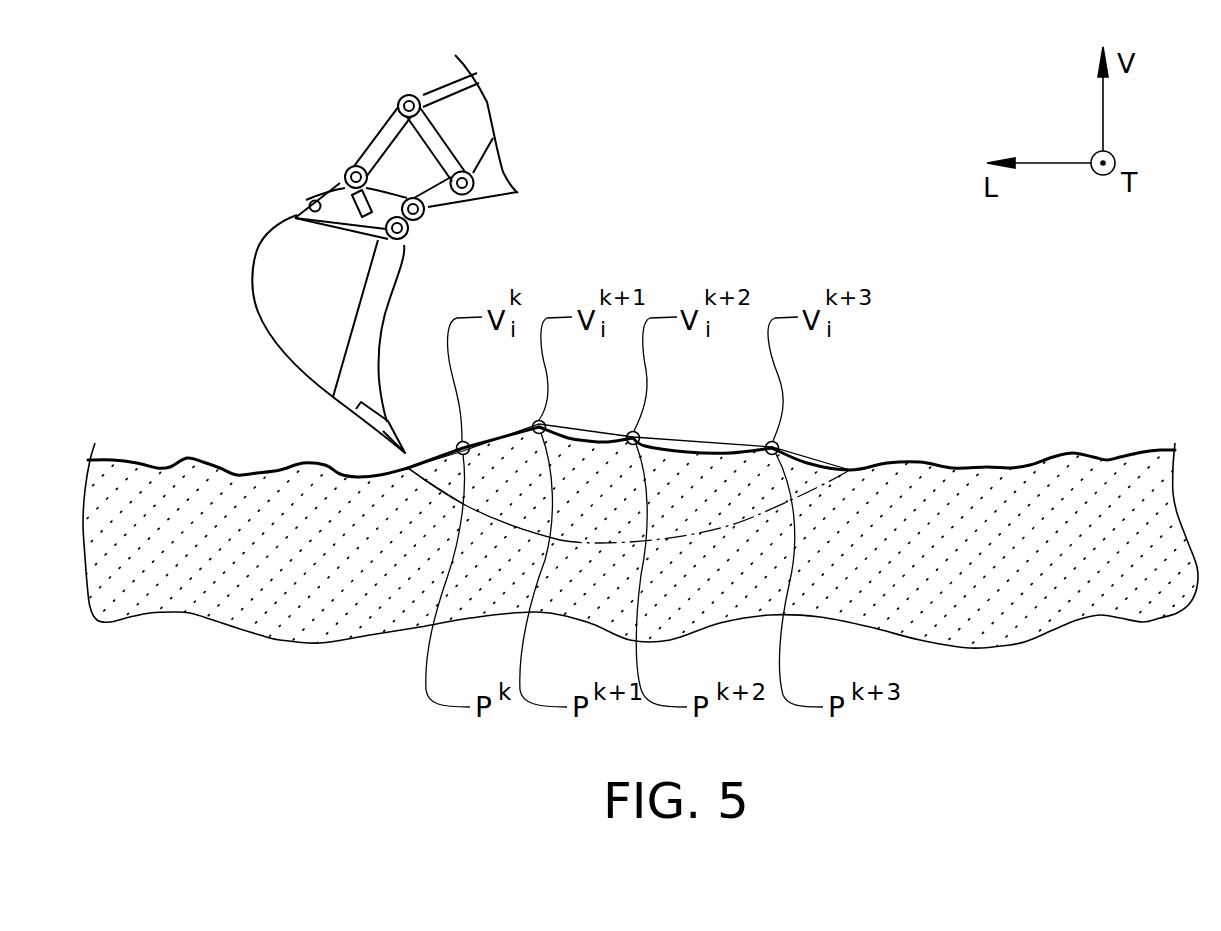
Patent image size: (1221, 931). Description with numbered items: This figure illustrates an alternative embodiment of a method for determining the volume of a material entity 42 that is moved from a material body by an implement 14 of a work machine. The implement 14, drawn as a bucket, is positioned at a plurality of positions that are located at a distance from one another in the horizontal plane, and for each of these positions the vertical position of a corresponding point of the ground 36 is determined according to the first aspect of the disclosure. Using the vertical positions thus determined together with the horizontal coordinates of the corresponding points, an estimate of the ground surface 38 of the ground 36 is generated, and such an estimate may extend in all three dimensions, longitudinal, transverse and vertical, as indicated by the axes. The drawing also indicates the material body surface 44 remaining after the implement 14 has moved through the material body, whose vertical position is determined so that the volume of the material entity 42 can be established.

The implement 14 is at (318, 289).
The ground 36 is at (1068, 512).
The ground surface 38 is at (971, 465).
The material entity 42 is at (806, 478).
The material body surface 44 is at (430, 487).